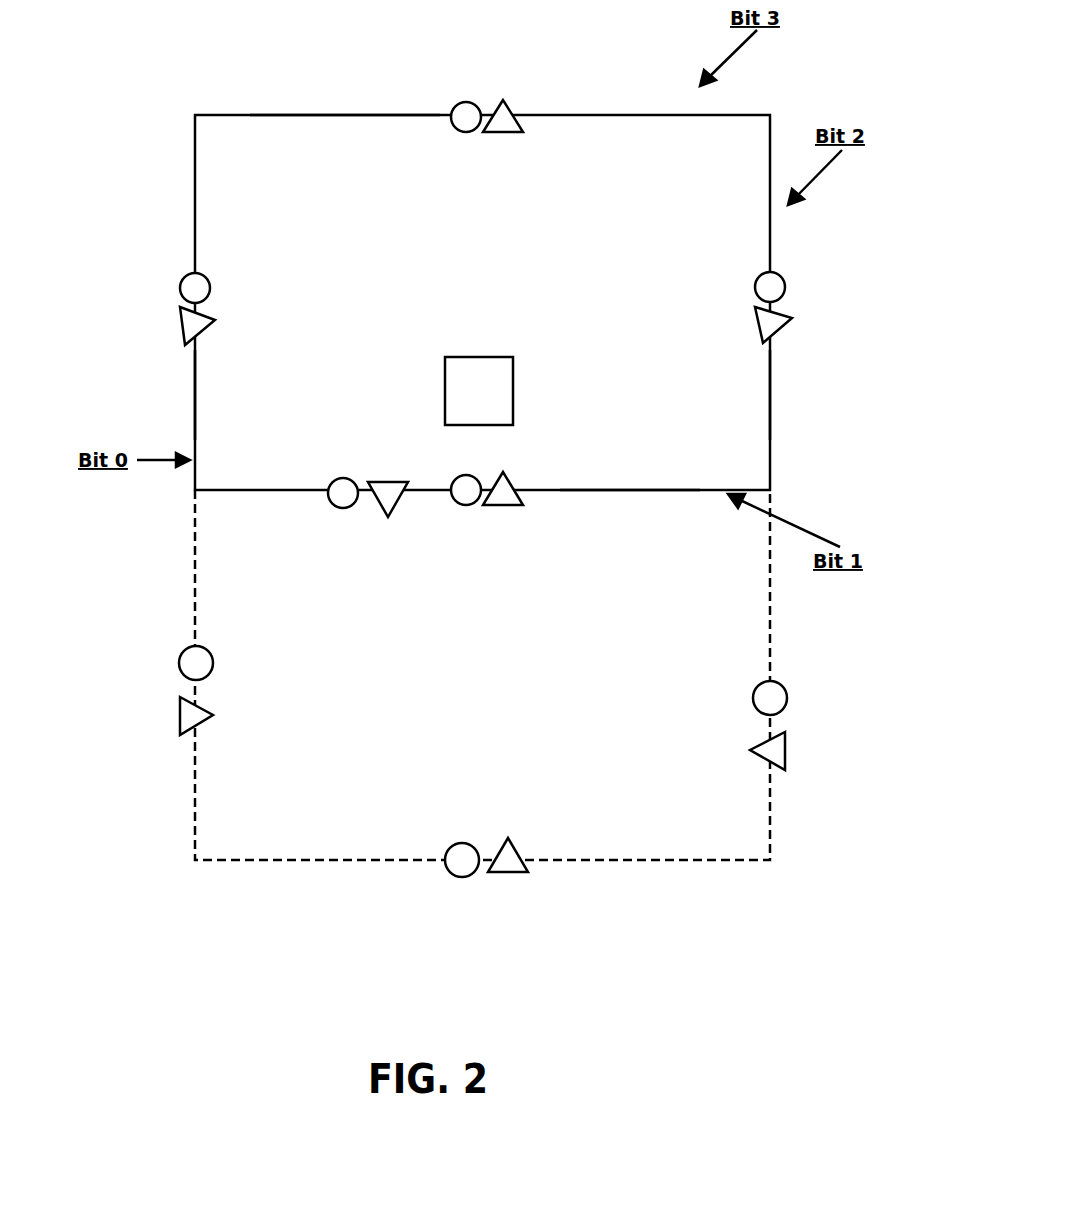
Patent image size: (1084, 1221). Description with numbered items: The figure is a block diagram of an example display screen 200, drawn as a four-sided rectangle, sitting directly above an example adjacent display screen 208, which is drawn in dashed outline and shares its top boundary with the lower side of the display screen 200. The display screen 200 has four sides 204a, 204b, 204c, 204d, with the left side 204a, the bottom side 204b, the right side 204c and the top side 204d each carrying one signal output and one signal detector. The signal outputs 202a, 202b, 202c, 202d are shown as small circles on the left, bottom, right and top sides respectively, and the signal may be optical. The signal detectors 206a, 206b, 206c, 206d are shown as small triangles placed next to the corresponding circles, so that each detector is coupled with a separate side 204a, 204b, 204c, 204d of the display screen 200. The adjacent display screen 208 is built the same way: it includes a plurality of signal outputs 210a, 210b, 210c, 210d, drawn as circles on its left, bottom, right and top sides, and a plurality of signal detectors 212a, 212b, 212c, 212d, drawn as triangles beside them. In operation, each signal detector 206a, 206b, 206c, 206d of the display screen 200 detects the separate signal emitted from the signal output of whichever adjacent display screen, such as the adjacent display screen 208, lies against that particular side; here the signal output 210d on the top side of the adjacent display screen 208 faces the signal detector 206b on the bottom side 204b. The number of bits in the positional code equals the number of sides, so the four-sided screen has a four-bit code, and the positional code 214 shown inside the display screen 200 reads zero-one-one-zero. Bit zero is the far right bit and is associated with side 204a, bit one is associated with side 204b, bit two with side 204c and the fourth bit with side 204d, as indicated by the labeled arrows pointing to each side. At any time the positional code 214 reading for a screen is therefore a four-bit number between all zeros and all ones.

The display screen 200 is at (482, 302).
The signal output 202a is at (180, 285).
The signal output 202b is at (458, 505).
The signal output 202c is at (770, 272).
The signal output 202d is at (479, 100).
The side 204a is at (195, 408).
The side 204b is at (670, 490).
The side 204c is at (770, 400).
The side 204d is at (363, 115).
The signal detector 206a is at (178, 317).
The signal detector 206b is at (505, 505).
The signal detector 206c is at (792, 318).
The signal detector 206d is at (502, 100).
The adjacent display screen 208 is at (482, 675).
The signal output 210a is at (178, 660).
The signal output 210b is at (450, 875).
The signal output 210c is at (770, 682).
The signal output 210d is at (338, 507).
The signal detector 212a is at (178, 725).
The signal detector 212b is at (513, 878).
The signal detector 212c is at (785, 750).
The signal detector 212d is at (397, 500).
The positional code 214 is at (445, 391).